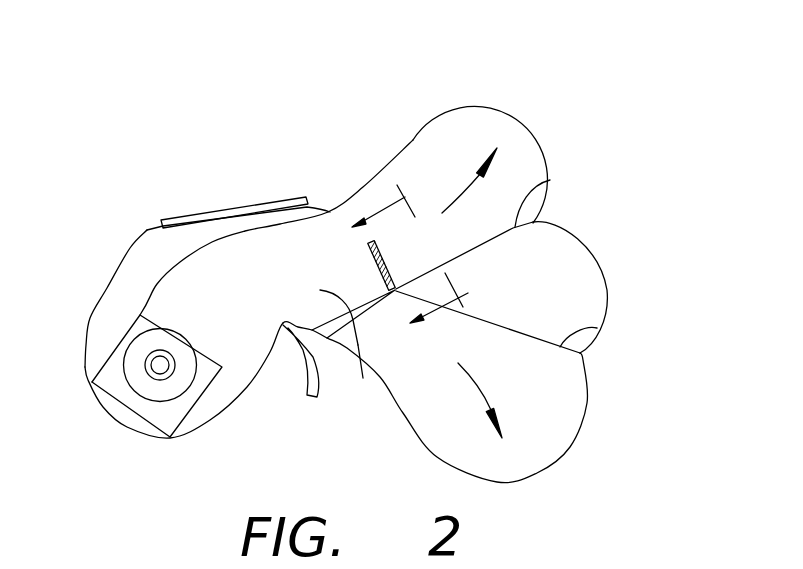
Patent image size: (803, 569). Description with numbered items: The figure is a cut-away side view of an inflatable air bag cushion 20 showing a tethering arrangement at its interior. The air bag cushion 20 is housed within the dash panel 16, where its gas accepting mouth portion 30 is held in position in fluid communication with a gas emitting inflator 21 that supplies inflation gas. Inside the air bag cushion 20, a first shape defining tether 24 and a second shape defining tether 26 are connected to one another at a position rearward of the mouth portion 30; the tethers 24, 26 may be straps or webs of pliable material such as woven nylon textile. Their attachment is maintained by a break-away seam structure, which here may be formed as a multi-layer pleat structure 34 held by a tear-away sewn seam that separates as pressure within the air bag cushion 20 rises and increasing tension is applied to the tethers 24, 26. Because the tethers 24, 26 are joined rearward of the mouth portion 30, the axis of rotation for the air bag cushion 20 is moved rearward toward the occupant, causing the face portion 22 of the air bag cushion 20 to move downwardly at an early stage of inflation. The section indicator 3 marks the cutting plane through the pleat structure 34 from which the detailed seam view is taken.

The air bag cushion 20 is at (615, 109).
The dash panel 16 is at (275, 200).
The gas accepting mouth portion 30 is at (160, 298).
The gas emitting inflator 21 is at (123, 370).
The multi-layer pleat structure 34 is at (390, 257).
The first shape defining tether 24 is at (550, 180).
The face portion 22 is at (596, 248).
The second shape defining tether 26 is at (597, 328).
The section line 3- 3 is at (393, 272).